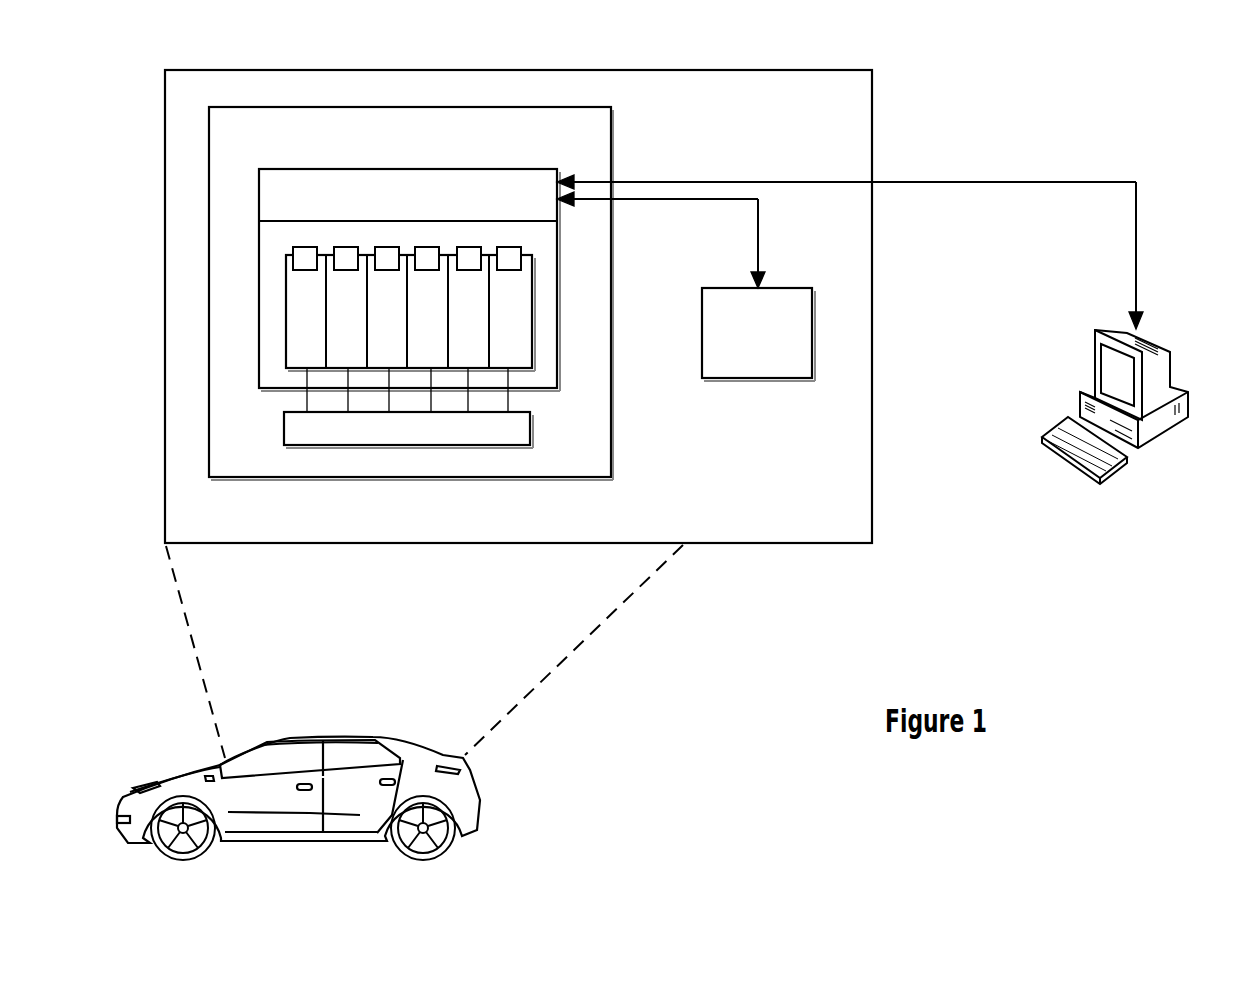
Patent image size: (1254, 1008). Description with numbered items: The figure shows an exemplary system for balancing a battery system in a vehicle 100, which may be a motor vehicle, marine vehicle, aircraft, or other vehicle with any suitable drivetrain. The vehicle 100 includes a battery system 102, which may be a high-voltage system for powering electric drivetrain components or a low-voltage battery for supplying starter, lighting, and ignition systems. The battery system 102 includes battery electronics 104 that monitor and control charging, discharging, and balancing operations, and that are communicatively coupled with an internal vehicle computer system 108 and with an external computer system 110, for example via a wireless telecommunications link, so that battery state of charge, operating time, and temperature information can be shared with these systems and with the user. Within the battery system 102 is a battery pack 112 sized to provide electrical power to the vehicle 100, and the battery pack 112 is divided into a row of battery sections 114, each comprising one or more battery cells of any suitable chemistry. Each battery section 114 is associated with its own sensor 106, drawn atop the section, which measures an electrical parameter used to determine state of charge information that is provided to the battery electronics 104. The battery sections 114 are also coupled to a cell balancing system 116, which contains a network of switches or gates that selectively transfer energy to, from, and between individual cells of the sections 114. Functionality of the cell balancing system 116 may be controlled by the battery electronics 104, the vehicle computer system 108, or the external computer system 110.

The vehicle 100 is at (200, 766).
The battery system 102 is at (411, 293).
The battery electronics 104 is at (409, 280).
The sensors 106 is at (377, 247).
The vehicle computer system 108 is at (686, 286).
The external computer system 110 is at (1068, 463).
The battery pack 112 is at (422, 298).
The battery sections 114 is at (383, 355).
The cell balancing system 116 is at (408, 408).